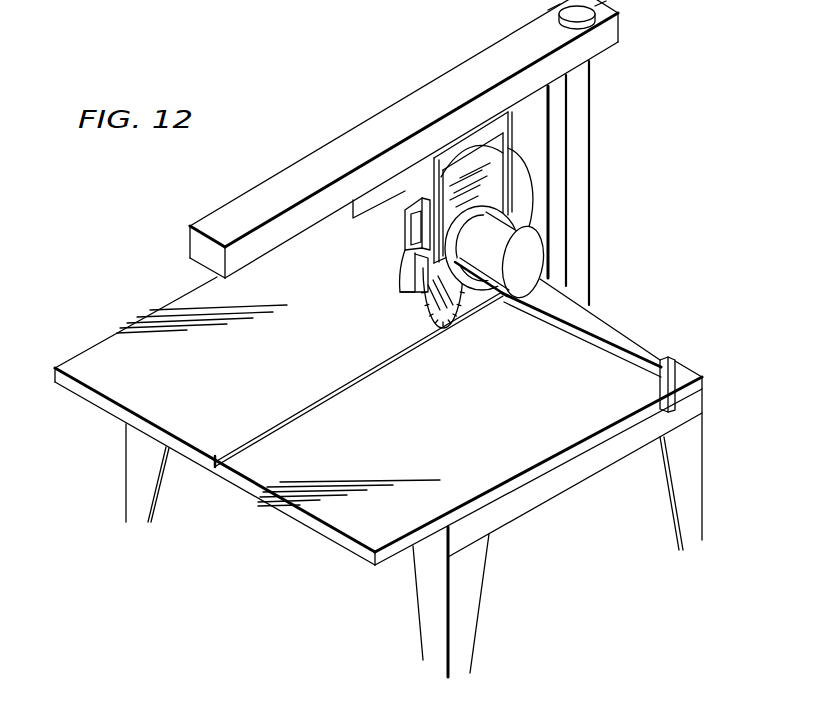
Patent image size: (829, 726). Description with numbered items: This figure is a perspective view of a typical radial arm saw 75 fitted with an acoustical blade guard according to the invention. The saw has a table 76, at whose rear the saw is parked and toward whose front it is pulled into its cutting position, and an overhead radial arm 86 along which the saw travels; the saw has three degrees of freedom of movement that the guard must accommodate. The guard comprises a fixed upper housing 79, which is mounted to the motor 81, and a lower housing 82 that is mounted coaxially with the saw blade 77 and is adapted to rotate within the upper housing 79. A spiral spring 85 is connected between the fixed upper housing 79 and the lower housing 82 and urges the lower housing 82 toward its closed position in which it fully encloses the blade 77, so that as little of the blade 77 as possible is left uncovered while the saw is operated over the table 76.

The radial arm saw 75 is at (176, 269).
The table 76 is at (102, 345).
The saw blade 77 is at (428, 292).
The upper housing 79 is at (537, 190).
The motor 81 is at (494, 294).
The lower housing 82 is at (527, 240).
The spiral spring 85 is at (494, 224).
The radial arm 86 is at (368, 121).